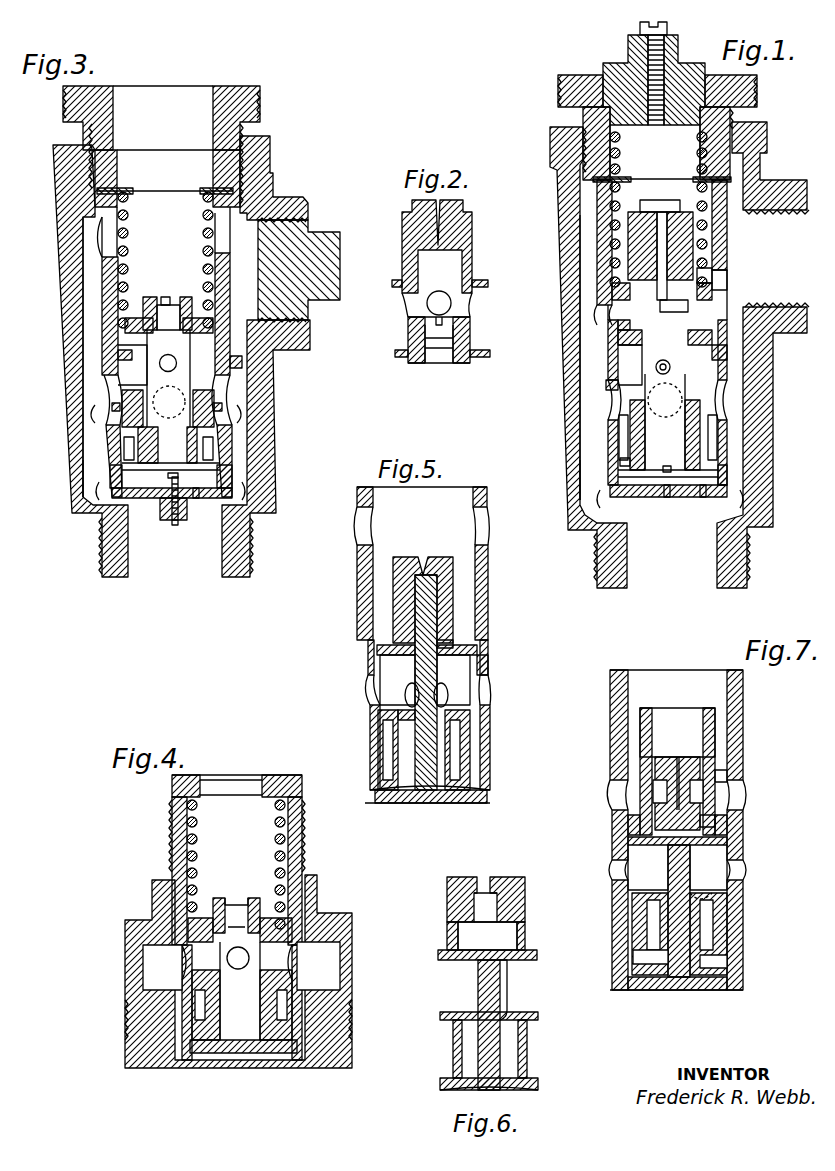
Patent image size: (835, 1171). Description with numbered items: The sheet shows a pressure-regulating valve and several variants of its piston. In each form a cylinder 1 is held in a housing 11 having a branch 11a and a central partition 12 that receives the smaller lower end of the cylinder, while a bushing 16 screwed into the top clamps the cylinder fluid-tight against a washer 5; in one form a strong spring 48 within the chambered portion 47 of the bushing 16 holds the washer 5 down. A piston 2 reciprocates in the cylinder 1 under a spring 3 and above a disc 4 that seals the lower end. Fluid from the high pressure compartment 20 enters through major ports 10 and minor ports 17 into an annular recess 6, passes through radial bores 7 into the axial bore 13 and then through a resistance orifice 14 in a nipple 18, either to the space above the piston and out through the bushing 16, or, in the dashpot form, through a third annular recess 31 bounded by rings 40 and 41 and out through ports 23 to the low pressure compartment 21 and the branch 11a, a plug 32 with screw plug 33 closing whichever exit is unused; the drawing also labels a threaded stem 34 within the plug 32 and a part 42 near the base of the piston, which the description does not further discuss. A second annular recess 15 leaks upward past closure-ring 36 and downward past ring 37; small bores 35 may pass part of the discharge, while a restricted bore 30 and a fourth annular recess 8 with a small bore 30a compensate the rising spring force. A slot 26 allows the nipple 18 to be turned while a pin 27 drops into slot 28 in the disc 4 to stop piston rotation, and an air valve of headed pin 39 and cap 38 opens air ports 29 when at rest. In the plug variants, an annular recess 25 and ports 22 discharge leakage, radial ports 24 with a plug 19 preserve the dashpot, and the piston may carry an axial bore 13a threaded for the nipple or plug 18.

In FIG. 3, the cylinder 1 is at (232, 453).
In FIG. 1, the cylinder 1 is at (727, 463).
In FIG. 5, the cylinder 1 is at (487, 582).
In FIG. 4, the cylinder 1 is at (302, 853).
In FIG. 7, the cylinder 1 is at (737, 683).
In FIG. 3, the piston 2 is at (210, 437).
In FIG. 1, the piston 2 is at (700, 428).
In FIG. 5, the piston 2 is at (426, 682).
In FIG. 4, the piston 2 is at (205, 1013).
In FIG. 6, the piston 2 is at (492, 1050).
In FIG. 7, the piston 2 is at (679, 911).
In FIG. 3, the spring 3 is at (128, 218).
In FIG. 1, the spring 3 is at (621, 188).
In FIG. 4, the spring 3 is at (197, 840).
In FIG. 3, the disc 4 is at (147, 498).
In FIG. 1, the disc 4 is at (657, 498).
In FIG. 5, the disc 4 is at (398, 803).
In FIG. 4, the disc 4 is at (205, 1055).
In FIG. 7, the disc 4 is at (647, 992).
In FIG. 3, the washer 5 is at (117, 189).
In FIG. 1, the washer 5 is at (622, 177).
In FIG. 4, the washer 5 is at (270, 780).
In FIG. 3, the annular recess 6 is at (127, 365).
In FIG. 1, the annular recess 6 is at (627, 360).
In FIG. 5, the annular recess 6 is at (397, 680).
In FIG. 4, the annular recess 6 is at (282, 973).
In FIG. 6, the annular recess 6 is at (450, 977).
In FIG. 7, the annular recess 6 is at (648, 867).
In FIG. 3, the radial bores 7 is at (168, 363).
In FIG. 1, the radial bores 7 is at (672, 367).
In FIG. 4, the radial bores 7 is at (238, 958).
In FIG. 1, the fourth annular recess 8 is at (623, 460).
In FIG. 7, the fourth annular recess 8 is at (725, 958).
In FIG. 3, the radial bores 10 is at (224, 408).
In FIG. 1, the radial bores 10 is at (717, 397).
In FIG. 5, the radial bores 10 is at (412, 695).
In FIG. 4, the radial bores 10 is at (185, 963).
In FIG. 7, the radial bores 10 is at (663, 887).
In FIG. 3, the housing 11 is at (168, 356).
In FIG. 1, the housing 11 is at (666, 355).
In FIG. 4, the housing 11 is at (138, 955).
In FIG. 3, the branch 11a is at (287, 205).
In FIG. 1, the branch 11a is at (792, 182).
In FIG. 3, the central partition 12 is at (128, 357).
In FIG. 1, the central partition 12 is at (607, 333).
In FIG. 3, the axial bore 13 is at (169, 402).
In FIG. 1, the axial bore 13 is at (657, 430).
In FIG. 5, the axial bore 13 is at (450, 717).
In FIG. 4, the axial bore 13 is at (240, 991).
In FIG. 6, the axial bore 13 is at (507, 1017).
In FIG. 7, the axial bore 13 is at (700, 897).
In FIG. 6, the axial bore 13a is at (486, 936).
In FIG. 7, the axial bore 13a is at (677, 732).
In FIG. 3, the resistance orifice 14 is at (170, 313).
In FIG. 1, the resistance orifice 14 is at (690, 302).
In FIG. 2, the resistance orifice 14 is at (445, 332).
In FIG. 5, the resistance orifice 14 is at (448, 647).
In FIG. 4, the resistance orifice 14 is at (238, 917).
In FIG. 6, the resistance orifice 14 is at (485, 907).
In FIG. 7, the resistance orifice 14 is at (712, 822).
In FIG. 3, the annular recess 15 is at (128, 440).
In FIG. 1, the annular recess 15 is at (625, 432).
In FIG. 5, the annular recess 15 is at (388, 765).
In FIG. 4, the annular recess 15 is at (197, 1007).
In FIG. 6, the annular recess 15 is at (448, 1056).
In FIG. 7, the annular recess 15 is at (725, 913).
In FIG. 3, the bushing 16 is at (63, 108).
In FIG. 1, the bushing 16 is at (563, 88).
In FIG. 3, the radial bores 17 is at (242, 362).
In FIG. 1, the radial bores 17 is at (675, 367).
In FIG. 5, the radial bores 17 is at (488, 670).
In FIG. 3, the resistance nipple 18 is at (150, 300).
In FIG. 1, the resistance nipple 18 is at (647, 243).
In FIG. 2, the resistance nipple 18 is at (428, 340).
In FIG. 5, the resistance nipple 18 is at (410, 562).
In FIG. 4, the resistance nipple 18 is at (252, 903).
In FIG. 6, the resistance nipple 18 is at (450, 885).
In FIG. 7, the resistance nipple 18 is at (670, 757).
In FIG. 2, the plug 19 is at (465, 203).
In FIG. 3, the compartment 20 is at (103, 468).
In FIG. 1, the compartment 20 is at (595, 377).
In FIG. 4, the compartment 20 is at (160, 977).
In FIG. 3, the compartment 21 is at (95, 277).
In FIG. 1, the compartment 21 is at (590, 258).
In FIG. 1, the ports 22 is at (712, 287).
In FIG. 7, the ports 22 is at (710, 792).
In FIG. 3, the ports 23 is at (110, 235).
In FIG. 1, the ports 23 is at (607, 312).
In FIG. 5, the ports 23 is at (368, 528).
In FIG. 7, the ports 23 is at (620, 793).
In FIG. 2, the radial ports 24 is at (410, 307).
In FIG. 1, the annular recess 25 is at (673, 237).
In FIG. 3, the slot 26 is at (165, 296).
In FIG. 3, the pin 27 is at (203, 475).
In FIG. 1, the pin 27 is at (697, 477).
In FIG. 3, the slot 28 is at (197, 493).
In FIG. 1, the slot 28 is at (703, 497).
In FIG. 3, the air ports 29 is at (182, 477).
In FIG. 1, the air ports 29 is at (667, 498).
In FIG. 3, the restricted bore 30 is at (170, 464).
In FIG. 1, the restricted bore 30 is at (697, 457).
In FIG. 1, the small bore 30a is at (668, 466).
In FIG. 1, the third annular recess 31 is at (617, 293).
In FIG. 2, the third annular recess 31 is at (407, 327).
In FIG. 7, the third annular recess 31 is at (638, 827).
In FIG. 3, the plug 32 is at (312, 222).
In FIG. 1, the plug 32 is at (607, 65).
In FIG. 1, the screw plug 33 is at (640, 30).
In FIG. 1, the stem 34 is at (652, 80).
In FIG. 3, the small bores 35 is at (143, 420).
In FIG. 1, the small bores 35 is at (633, 413).
In FIG. 5, the small bores 35 is at (408, 727).
In FIG. 3, the closure-ring 36 is at (114, 407).
In FIG. 1, the closure-ring 36 is at (612, 385).
In FIG. 7, the closure-ring 36 is at (637, 893).
In FIG. 3, the ring 37 is at (117, 473).
In FIG. 1, the ring 37 is at (622, 445).
In FIG. 7, the ring 37 is at (637, 952).
In FIG. 3, the cap 38 is at (185, 515).
In FIG. 3, the headed pin 39 is at (173, 525).
In FIG. 3, the ring 40 is at (128, 327).
In FIG. 1, the ring 40 is at (627, 347).
In FIG. 2, the ring 40 is at (397, 353).
In FIG. 5, the ring 40 is at (378, 652).
In FIG. 6, the ring 40 is at (438, 954).
In FIG. 7, the ring 40 is at (638, 840).
In FIG. 1, the ring 41 is at (697, 270).
In FIG. 2, the ring 41 is at (393, 282).
In FIG. 7, the ring 41 is at (723, 777).
In FIG. 1, the slot 42 is at (632, 475).
In FIG. 1, the chambered portion 47 is at (655, 151).
In FIG. 1, the spring 48 is at (620, 137).